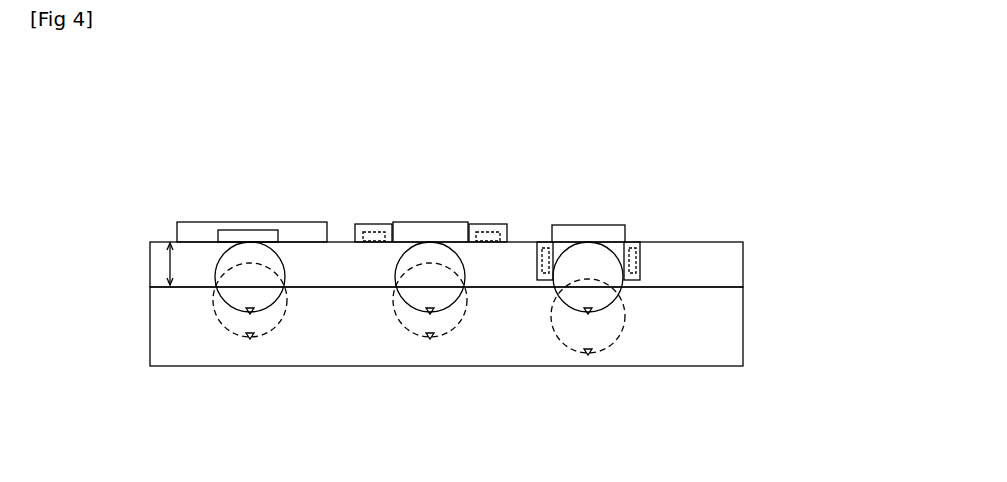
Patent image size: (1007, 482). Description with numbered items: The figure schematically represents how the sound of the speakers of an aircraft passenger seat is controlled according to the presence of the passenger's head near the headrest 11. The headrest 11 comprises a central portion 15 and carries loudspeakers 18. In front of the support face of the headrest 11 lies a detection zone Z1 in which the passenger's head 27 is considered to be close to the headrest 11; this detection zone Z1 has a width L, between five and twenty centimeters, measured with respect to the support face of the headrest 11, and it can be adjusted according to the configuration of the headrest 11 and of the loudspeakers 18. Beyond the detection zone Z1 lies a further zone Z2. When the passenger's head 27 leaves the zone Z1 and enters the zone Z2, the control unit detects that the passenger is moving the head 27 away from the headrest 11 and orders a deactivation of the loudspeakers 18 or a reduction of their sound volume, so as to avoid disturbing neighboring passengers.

The headrest 11 is at (203, 232).
The central portion 15 is at (427, 223).
The loudspeaker 18 is at (238, 232).
The passenger's head 27 is at (244, 296).
The width of the detection zone L is at (150, 263).
The detection zone Z1 is at (690, 262).
The zone Z2 is at (715, 320).